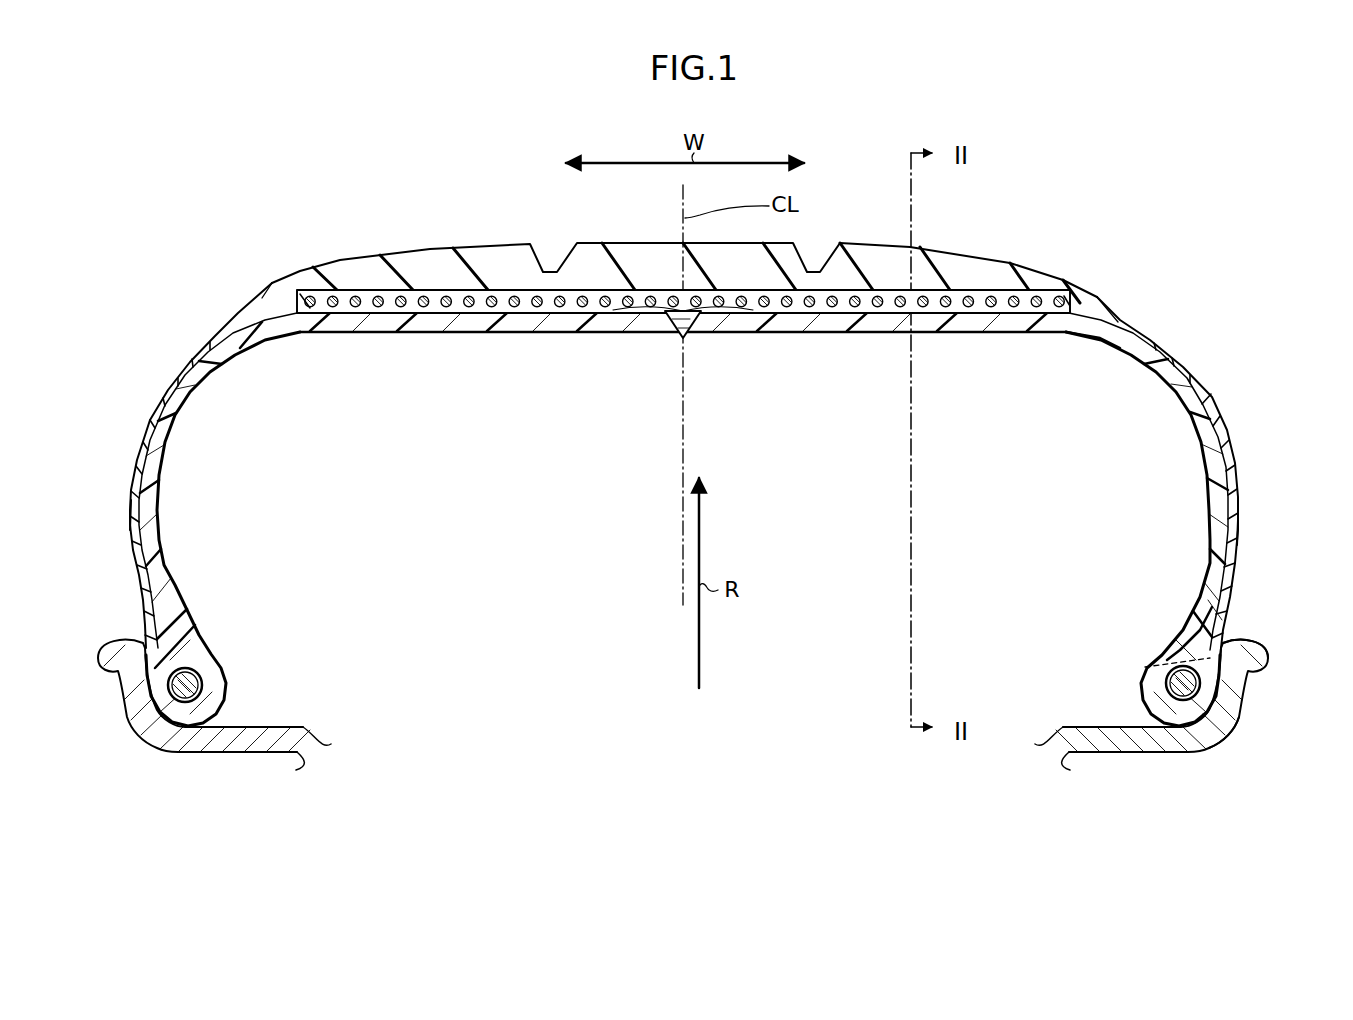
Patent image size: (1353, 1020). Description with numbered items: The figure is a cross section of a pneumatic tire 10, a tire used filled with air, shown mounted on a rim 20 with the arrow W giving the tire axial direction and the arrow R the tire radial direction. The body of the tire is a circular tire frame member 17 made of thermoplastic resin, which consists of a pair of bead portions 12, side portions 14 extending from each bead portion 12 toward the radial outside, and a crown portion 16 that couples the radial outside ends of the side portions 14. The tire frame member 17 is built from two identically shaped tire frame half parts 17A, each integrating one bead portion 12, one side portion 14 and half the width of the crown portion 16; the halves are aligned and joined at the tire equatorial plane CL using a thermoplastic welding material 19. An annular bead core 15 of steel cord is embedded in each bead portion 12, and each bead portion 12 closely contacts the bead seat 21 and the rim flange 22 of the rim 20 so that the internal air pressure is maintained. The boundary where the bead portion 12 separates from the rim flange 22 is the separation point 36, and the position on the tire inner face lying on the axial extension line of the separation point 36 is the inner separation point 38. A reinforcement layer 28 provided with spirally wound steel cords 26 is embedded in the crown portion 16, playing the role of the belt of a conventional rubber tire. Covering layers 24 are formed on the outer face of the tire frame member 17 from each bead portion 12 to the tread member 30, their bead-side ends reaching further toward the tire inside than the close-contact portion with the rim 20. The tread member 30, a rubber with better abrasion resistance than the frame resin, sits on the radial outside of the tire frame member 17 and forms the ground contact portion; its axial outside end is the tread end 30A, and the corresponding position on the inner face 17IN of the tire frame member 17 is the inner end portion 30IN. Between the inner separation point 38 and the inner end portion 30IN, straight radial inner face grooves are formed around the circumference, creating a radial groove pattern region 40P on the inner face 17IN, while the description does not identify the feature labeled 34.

The pneumatic tire 10 is at (1198, 199).
The bead portion 12 is at (162, 638).
The side portion 14 is at (148, 471).
The bead core 15 is at (204, 684).
The crown portion 16 is at (577, 294).
The tire frame member 17 is at (1193, 374).
The tire frame half part 17A is at (184, 390).
The inner face 17IN is at (163, 500).
The thermoplastic welding material 19 is at (692, 332).
The rim 20 is at (1129, 758).
The bead seat 21 is at (1118, 727).
The rim flange 22 is at (1248, 696).
The covering layer 24 is at (131, 518).
The spirally wound steel cords 26 is at (1030, 298).
The reinforcement layer 28 is at (1080, 302).
The tread member 30 is at (952, 245).
The tread end 30A is at (250, 318).
The inner end portion 30IN is at (1118, 350).
The belt edge 34 is at (293, 298).
The separation point 36 is at (1237, 645).
The inner separation point 38 is at (1148, 667).
The radial groove pattern region 40P is at (1200, 531).